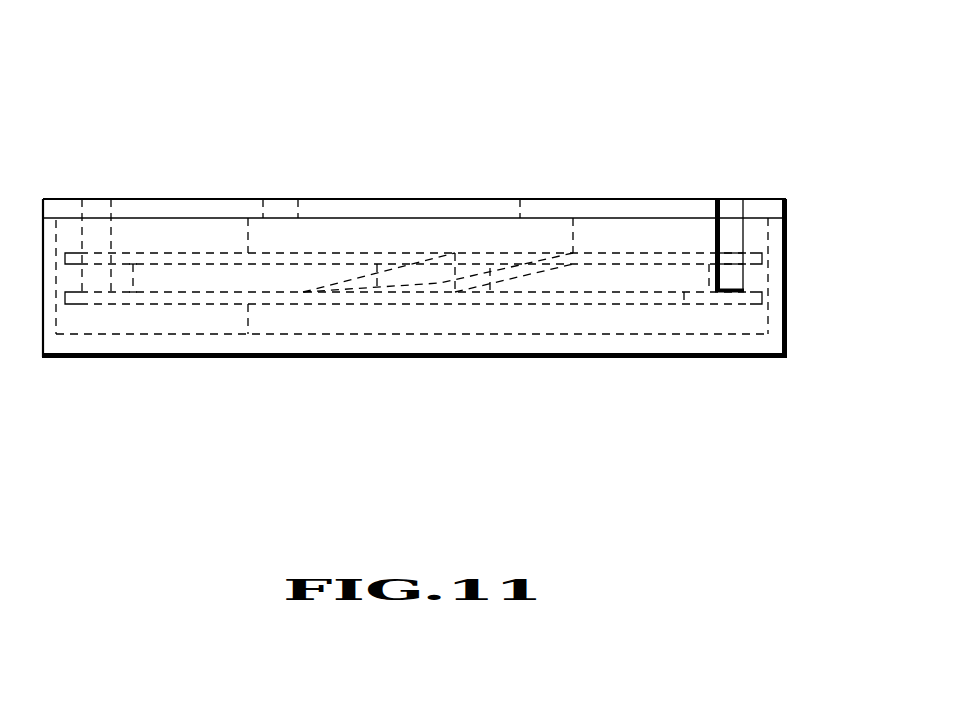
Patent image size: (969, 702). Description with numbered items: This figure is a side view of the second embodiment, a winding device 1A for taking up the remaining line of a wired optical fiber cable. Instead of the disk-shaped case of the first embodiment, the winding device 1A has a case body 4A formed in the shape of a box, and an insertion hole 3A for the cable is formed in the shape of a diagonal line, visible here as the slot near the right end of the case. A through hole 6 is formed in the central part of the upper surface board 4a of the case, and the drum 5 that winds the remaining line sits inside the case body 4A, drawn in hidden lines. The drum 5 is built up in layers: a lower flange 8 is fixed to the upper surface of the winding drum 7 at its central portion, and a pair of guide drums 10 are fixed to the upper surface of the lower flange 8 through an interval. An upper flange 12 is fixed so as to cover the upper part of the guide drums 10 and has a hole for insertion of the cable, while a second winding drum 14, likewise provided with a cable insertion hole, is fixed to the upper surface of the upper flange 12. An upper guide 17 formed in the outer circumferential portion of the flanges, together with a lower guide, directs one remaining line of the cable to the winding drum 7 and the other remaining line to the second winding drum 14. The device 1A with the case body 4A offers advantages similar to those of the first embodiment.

The winding device 1A is at (633, 84).
The insertion hole 3A is at (732, 230).
The upper surface board 4a is at (380, 199).
The case body 4A is at (402, 360).
The drum 5 is at (205, 246).
The through hole 6 is at (519, 216).
The winding drum 7 is at (296, 334).
The lower flange 8 is at (684, 304).
The guide drums 10 is at (173, 292).
The upper flange 12 is at (645, 249).
The second winding drum 14 is at (262, 222).
The upper guide 17 is at (490, 292).